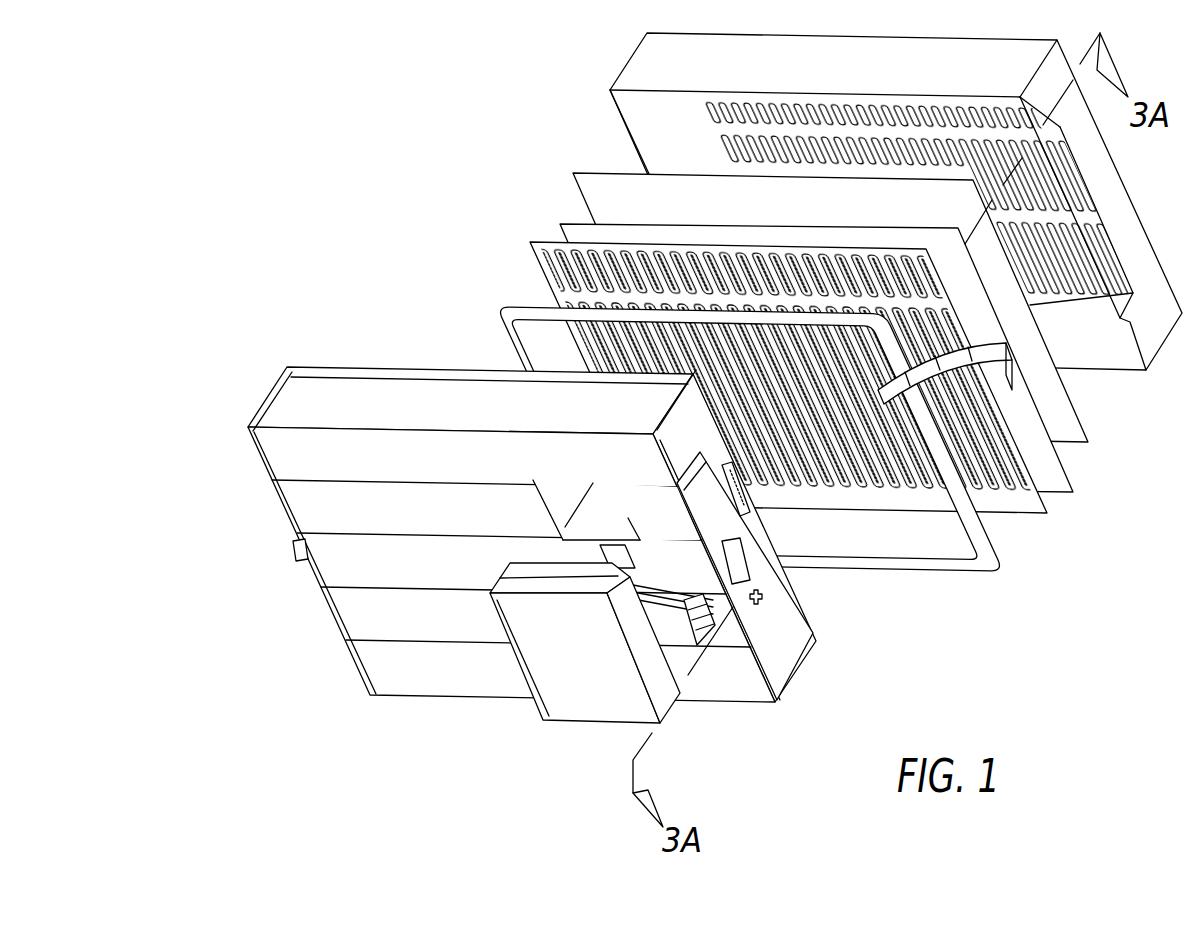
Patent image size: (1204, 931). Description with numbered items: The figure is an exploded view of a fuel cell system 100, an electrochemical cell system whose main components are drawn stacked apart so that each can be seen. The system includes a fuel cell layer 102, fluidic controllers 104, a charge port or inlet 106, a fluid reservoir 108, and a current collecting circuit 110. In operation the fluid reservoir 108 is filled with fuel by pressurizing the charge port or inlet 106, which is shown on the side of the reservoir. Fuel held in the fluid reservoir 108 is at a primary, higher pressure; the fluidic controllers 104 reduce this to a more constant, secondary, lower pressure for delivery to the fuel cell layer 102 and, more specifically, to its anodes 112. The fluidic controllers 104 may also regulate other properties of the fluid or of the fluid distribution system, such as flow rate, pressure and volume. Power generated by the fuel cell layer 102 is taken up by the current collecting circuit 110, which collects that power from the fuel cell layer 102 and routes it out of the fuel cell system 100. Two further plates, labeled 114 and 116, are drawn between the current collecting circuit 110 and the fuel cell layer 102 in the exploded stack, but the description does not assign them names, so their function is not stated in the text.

The fuel cell system 100 is at (318, 72).
The fuel cell layer 102 is at (1050, 513).
The fluidic controllers 104 is at (813, 633).
The charge port or inlet 106 is at (292, 553).
The fluid reservoir 108 is at (316, 366).
The current collecting circuit 110 is at (1012, 360).
The anodes 112 is at (916, 500).
The frame plate 114 is at (606, 240).
The insulating plate 116 is at (538, 268).